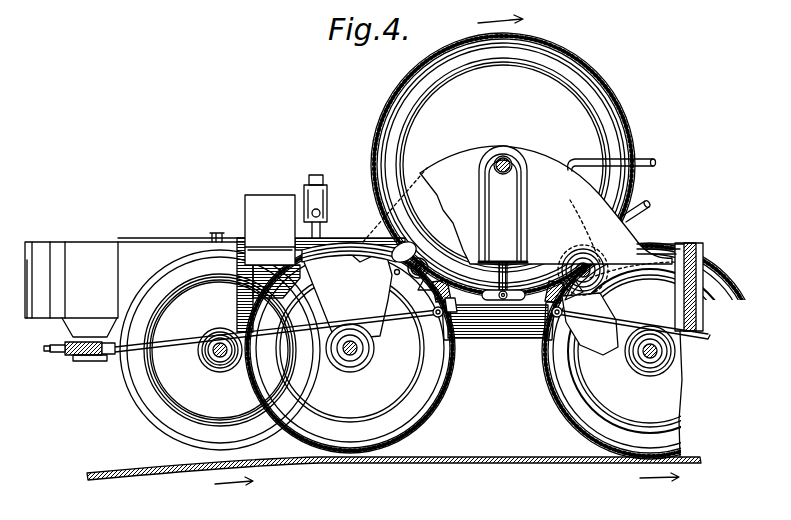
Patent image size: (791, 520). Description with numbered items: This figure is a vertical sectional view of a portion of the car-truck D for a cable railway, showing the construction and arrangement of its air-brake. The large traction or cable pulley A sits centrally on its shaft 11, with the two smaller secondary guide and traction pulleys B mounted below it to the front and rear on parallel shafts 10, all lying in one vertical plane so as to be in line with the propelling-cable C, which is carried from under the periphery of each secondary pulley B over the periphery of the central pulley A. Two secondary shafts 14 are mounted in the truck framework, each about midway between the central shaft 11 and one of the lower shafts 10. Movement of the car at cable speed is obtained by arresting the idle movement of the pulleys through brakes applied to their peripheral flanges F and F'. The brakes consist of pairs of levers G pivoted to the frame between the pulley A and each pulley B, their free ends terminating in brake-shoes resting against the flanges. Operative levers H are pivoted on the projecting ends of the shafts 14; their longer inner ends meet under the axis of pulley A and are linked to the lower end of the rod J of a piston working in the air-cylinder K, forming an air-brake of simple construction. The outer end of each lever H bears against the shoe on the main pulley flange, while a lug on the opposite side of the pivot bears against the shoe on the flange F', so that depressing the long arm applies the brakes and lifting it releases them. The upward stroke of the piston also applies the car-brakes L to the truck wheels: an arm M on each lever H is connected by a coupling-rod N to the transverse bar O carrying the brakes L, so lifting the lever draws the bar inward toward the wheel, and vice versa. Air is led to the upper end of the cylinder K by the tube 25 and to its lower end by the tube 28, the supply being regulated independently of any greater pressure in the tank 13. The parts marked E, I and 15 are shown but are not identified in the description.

The large traction or cable pulley A is at (394, 108).
The secondary guide and traction pulleys B is at (501, 351).
The propelling-cable C is at (127, 470).
The car-truck D is at (712, 294).
The wheel E is at (220, 350).
The peripheral flange F is at (521, 203).
The peripheral flange F' is at (460, 311).
The brake levers G is at (440, 240).
The operative levers H is at (443, 281).
The bracket I is at (451, 297).
The piston rod J is at (503, 281).
The air-cylinder K is at (486, 212).
The car-brakes L is at (115, 362).
The arm M is at (499, 320).
The coupling-rod N is at (340, 322).
The transverse bar O is at (78, 356).
The pulley-shafts 10 is at (340, 352).
The central shaft 11 is at (504, 172).
The tank 13 is at (496, 330).
The secondary shafts 14 is at (410, 268).
The axle 15 is at (212, 351).
The connecting-tube 25 is at (651, 158).
The connecting-tube 28 is at (653, 197).